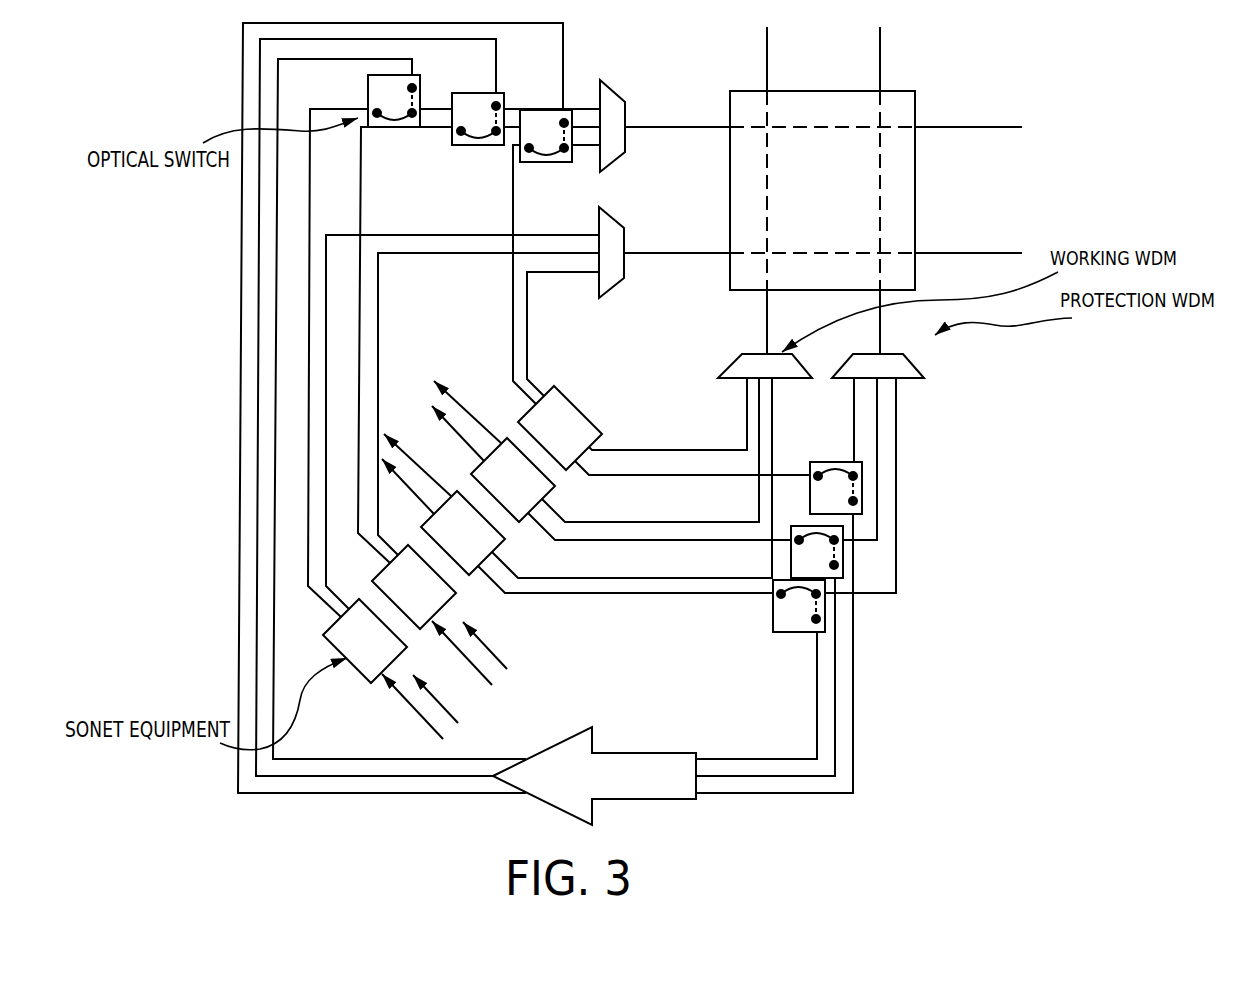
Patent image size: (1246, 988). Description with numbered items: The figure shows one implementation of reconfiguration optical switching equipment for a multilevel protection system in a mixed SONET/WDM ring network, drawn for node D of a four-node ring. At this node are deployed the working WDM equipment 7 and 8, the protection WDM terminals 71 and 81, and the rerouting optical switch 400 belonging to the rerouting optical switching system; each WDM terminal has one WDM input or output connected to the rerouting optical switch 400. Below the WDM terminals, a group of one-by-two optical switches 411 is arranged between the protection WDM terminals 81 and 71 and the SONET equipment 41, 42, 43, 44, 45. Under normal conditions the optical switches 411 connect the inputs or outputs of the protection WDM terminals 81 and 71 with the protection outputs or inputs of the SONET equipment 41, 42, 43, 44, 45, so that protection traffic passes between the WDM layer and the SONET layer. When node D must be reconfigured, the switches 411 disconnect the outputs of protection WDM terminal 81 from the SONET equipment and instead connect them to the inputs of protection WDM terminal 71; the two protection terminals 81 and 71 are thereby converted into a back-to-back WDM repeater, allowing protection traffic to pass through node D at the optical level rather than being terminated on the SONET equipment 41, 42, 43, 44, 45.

The 1×2 optical switch 411 is at (597, 362).
The protection WDM terminal 71 is at (627, 126).
The working WDM equipment 7 is at (622, 252).
The rerouting optical switch 400 is at (822, 190).
The working WDM equipment 8 is at (765, 358).
The protection WDM terminal 81 is at (886, 358).
The SONET equipment 41 is at (560, 428).
The SONET equipment 42 is at (513, 480).
The SONET equipment 43 is at (463, 533).
The SONET equipment 44 is at (414, 587).
The SONET equipment 45 is at (365, 641).
The node D is at (665, 311).